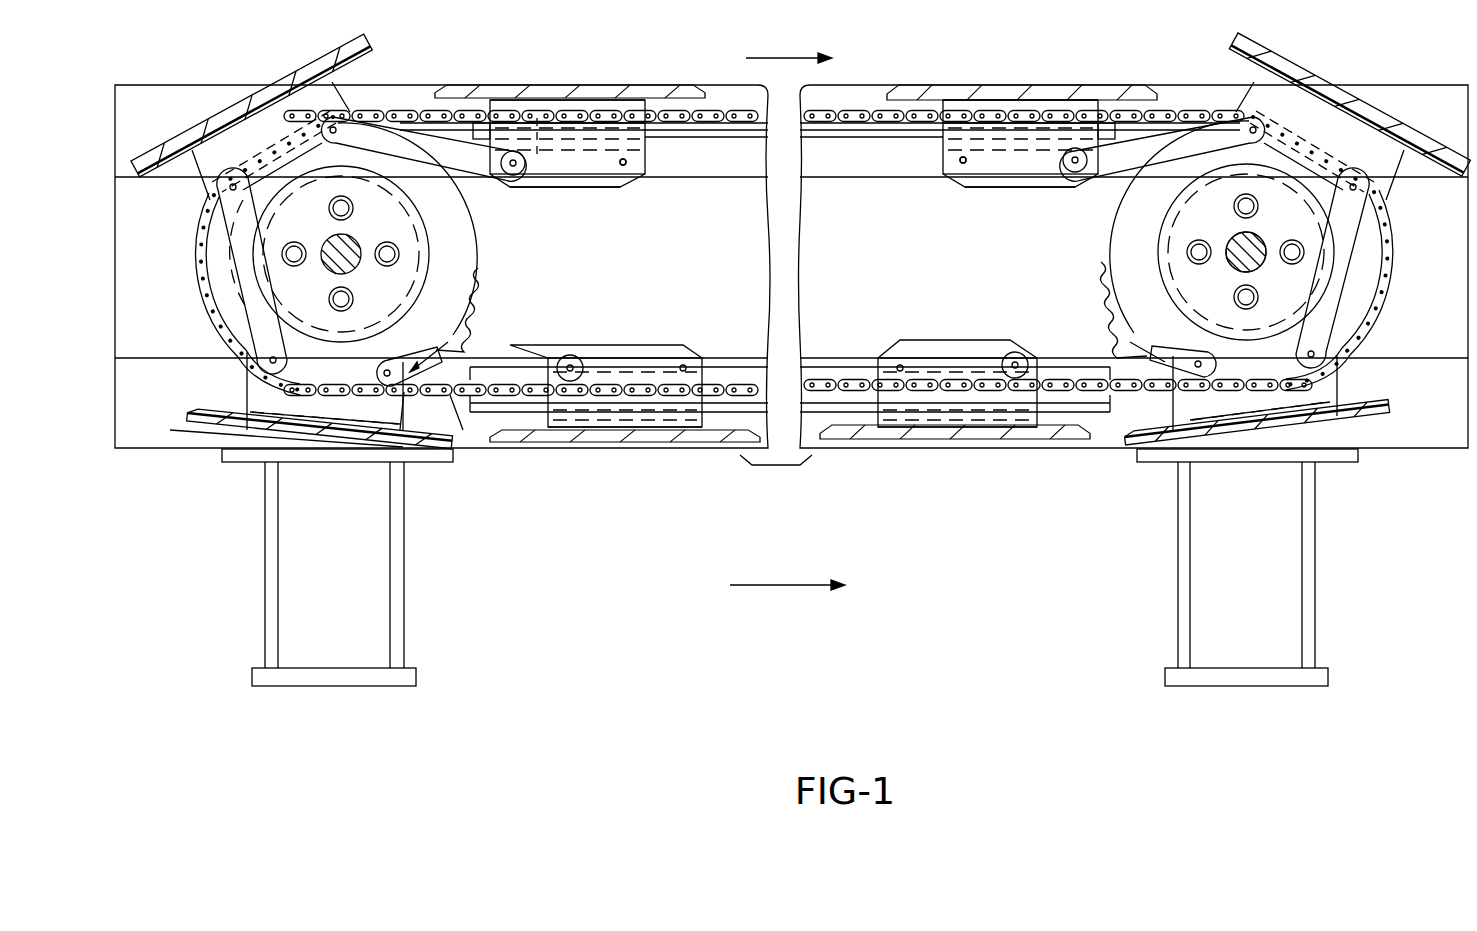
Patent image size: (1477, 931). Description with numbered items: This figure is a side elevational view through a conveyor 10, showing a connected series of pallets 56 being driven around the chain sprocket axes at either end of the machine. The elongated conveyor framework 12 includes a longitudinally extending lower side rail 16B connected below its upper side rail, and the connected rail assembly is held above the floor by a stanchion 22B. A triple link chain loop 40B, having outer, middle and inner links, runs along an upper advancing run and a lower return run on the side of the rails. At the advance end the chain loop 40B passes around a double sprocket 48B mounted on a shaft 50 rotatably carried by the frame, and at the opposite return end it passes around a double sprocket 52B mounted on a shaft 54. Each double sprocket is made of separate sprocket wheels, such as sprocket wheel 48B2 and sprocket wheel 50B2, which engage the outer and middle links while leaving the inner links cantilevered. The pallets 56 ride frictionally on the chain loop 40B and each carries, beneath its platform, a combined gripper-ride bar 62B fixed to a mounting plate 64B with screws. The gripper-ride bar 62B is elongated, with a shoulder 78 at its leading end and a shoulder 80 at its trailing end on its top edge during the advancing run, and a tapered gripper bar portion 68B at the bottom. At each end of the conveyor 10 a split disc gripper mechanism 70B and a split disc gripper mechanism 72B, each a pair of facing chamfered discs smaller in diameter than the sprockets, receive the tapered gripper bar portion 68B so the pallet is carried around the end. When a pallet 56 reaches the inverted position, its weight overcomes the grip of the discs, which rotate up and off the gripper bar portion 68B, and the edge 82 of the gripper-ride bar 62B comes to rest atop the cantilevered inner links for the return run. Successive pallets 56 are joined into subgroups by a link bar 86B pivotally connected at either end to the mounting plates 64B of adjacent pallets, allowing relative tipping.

The conveyor 10 is at (800, 40).
The conveyor framework 12 is at (182, 455).
The lower side rail 16B is at (695, 452).
The stanchion 22B is at (262, 585).
The triple link chain loop 40B is at (706, 110).
The double sprocket 48B is at (485, 272).
The sprocket wheel 48B2 is at (430, 350).
The shaft 50 is at (480, 258).
The sprocket wheel 50B2 is at (1140, 312).
The double sprocket 52B is at (1098, 268).
The shaft 54 is at (1222, 244).
The pallet 56 is at (252, 97).
The gripper-ride bar 62B is at (635, 178).
The mounting plate 64B is at (650, 152).
The gripper bar portion 68B is at (600, 190).
The split disc gripper mechanism 70B is at (362, 236).
The split disc gripper mechanism 72B is at (1148, 222).
The shoulder 78 is at (500, 160).
The shoulder 80 is at (625, 160).
The edge 82 is at (537, 150).
The link bar 86B is at (385, 128).